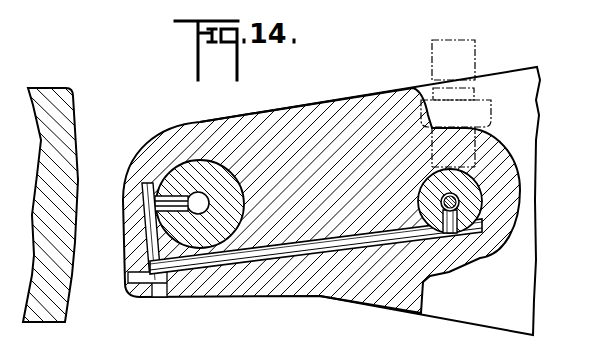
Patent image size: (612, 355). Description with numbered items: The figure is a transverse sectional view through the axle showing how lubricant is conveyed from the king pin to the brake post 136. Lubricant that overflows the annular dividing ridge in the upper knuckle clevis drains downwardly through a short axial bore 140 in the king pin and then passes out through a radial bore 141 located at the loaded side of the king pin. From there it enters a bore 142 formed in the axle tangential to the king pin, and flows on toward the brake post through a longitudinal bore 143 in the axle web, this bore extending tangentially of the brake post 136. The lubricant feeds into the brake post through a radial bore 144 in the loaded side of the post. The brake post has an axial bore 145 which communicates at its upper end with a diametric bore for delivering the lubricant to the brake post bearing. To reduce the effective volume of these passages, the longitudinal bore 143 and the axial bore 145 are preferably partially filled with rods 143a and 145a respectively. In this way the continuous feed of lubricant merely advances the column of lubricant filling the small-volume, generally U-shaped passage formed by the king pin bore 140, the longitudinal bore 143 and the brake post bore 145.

The brake post 136 is at (459, 200).
The short axial bore 140 is at (198, 200).
The radial bore 141 is at (170, 182).
The bore 142 is at (145, 249).
The longitudinal bore 143 is at (213, 275).
The rod 143a is at (288, 268).
The radial bore 144 is at (452, 236).
The axial bore 145 is at (480, 186).
The rod 145a is at (466, 209).